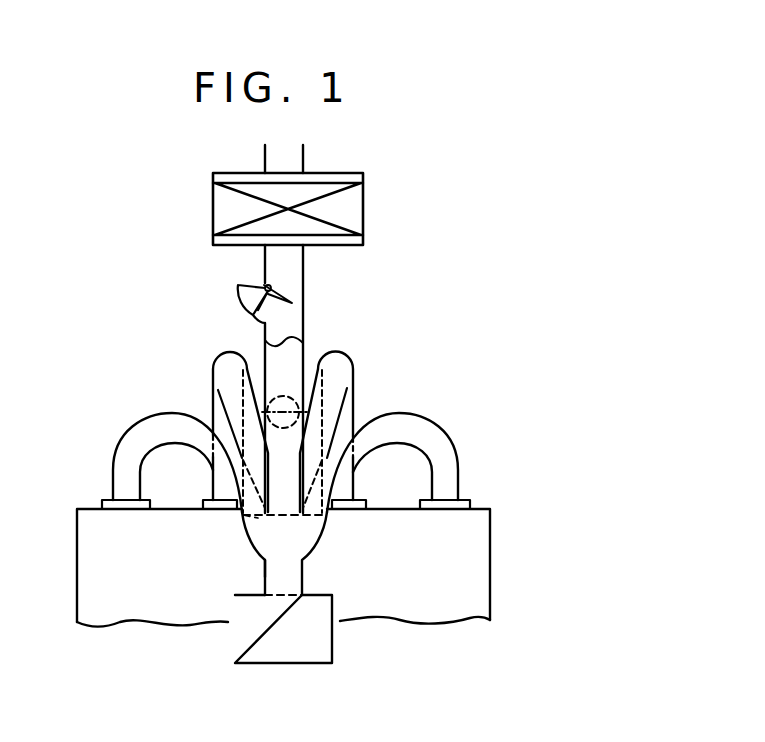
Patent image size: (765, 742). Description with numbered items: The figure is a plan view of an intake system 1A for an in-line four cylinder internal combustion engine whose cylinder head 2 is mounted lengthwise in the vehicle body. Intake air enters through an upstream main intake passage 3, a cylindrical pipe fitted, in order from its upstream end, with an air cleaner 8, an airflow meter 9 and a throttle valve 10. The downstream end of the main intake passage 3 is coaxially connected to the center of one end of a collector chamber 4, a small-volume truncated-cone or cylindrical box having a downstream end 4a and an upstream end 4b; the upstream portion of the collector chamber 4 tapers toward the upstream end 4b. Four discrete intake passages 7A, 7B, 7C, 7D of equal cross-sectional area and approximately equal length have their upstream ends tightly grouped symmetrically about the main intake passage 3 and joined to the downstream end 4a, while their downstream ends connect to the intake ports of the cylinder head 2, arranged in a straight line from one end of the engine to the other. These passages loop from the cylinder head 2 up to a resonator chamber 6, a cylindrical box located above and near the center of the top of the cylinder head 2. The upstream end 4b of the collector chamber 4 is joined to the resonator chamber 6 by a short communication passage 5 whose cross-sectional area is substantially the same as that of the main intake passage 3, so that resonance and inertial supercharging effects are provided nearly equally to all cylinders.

The intake system 1A is at (479, 241).
The cylinder head 2 is at (490, 582).
The main intake passage 3 is at (304, 287).
The collector chamber 4 is at (317, 543).
The downstream end 4a is at (258, 519).
The upstream end 4b is at (265, 560).
The communication passage 5 is at (265, 577).
The resonator chamber 6 is at (312, 663).
The first discrete intake passage 7A is at (442, 432).
The second discrete intake passage 7B is at (353, 372).
The third discrete intake passage 7C is at (213, 383).
The fourth discrete intake passage 7D is at (125, 438).
The air cleaner 8 is at (213, 205).
The airflow meter 9 is at (265, 286).
The throttle valve 10 is at (282, 397).